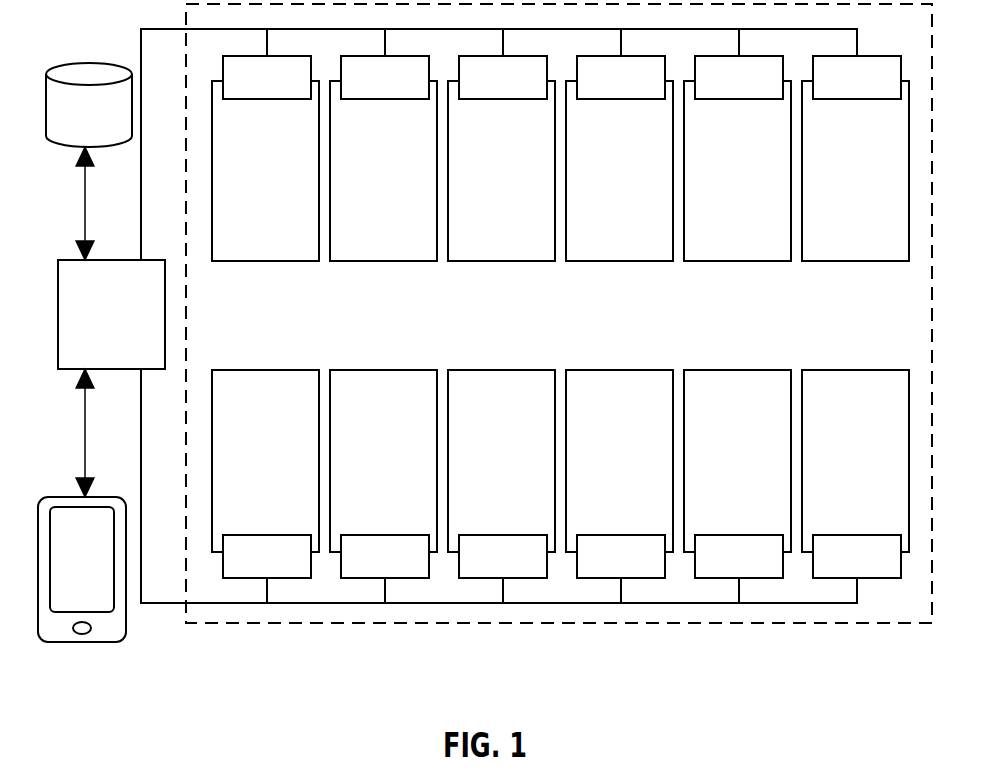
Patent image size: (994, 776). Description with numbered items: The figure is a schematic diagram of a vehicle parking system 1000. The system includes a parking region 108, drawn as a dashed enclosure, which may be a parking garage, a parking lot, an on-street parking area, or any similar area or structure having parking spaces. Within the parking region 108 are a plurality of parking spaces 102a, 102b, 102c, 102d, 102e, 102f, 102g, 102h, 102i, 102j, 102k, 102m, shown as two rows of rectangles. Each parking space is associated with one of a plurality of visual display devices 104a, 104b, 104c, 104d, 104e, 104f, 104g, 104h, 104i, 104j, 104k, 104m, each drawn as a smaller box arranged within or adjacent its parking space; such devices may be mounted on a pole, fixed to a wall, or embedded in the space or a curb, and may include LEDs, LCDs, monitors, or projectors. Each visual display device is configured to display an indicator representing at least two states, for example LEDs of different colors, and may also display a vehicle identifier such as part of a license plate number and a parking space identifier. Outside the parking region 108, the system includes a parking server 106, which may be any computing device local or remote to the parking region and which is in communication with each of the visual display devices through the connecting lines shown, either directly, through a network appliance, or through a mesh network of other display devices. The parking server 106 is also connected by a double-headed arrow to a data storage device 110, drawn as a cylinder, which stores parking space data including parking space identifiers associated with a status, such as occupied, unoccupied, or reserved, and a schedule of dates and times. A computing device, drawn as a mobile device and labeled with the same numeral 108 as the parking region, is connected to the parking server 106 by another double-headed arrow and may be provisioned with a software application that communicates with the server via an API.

The vehicle parking system 1000 is at (689, 647).
The parking space 102a is at (265, 171).
The parking space 102b is at (383, 171).
The parking space 102c is at (501, 171).
The parking space 102d is at (619, 171).
The parking space 102e is at (737, 171).
The parking space 102f is at (855, 171).
The parking space 102g is at (265, 461).
The parking space 102h is at (383, 461).
The parking space 102i is at (501, 461).
The parking space 102j is at (619, 461).
The parking space 102k is at (737, 461).
The parking space 102m is at (855, 461).
The visual display device 104a is at (267, 64).
The visual display device 104b is at (385, 64).
The visual display device 104c is at (503, 64).
The visual display device 104d is at (621, 64).
The visual display device 104e is at (739, 64).
The visual display device 104f is at (857, 64).
The visual display device 104g is at (267, 569).
The visual display device 104h is at (385, 569).
The visual display device 104i is at (503, 569).
The visual display device 104j is at (621, 569).
The visual display device 104k is at (739, 569).
The visual display device 104m is at (857, 569).
The parking server 106 is at (111, 322).
The parking region 108 is at (882, 644).
The data storage device 110 is at (89, 105).